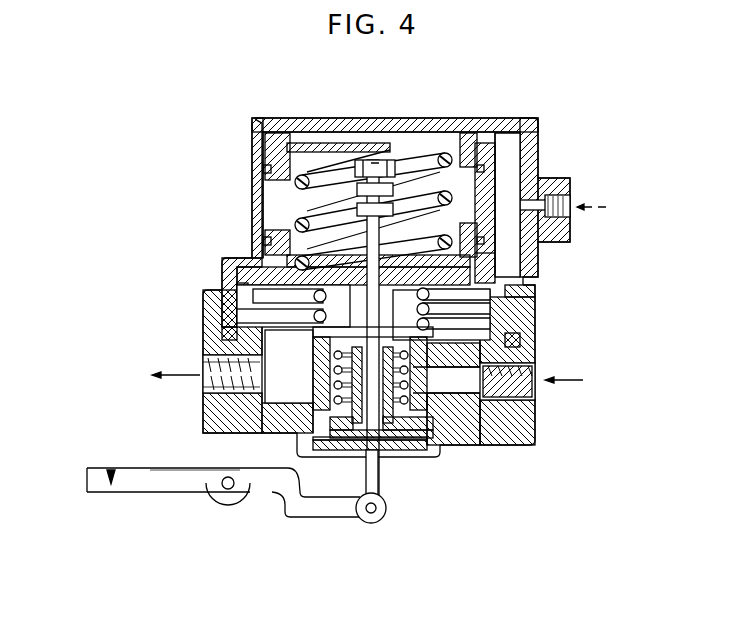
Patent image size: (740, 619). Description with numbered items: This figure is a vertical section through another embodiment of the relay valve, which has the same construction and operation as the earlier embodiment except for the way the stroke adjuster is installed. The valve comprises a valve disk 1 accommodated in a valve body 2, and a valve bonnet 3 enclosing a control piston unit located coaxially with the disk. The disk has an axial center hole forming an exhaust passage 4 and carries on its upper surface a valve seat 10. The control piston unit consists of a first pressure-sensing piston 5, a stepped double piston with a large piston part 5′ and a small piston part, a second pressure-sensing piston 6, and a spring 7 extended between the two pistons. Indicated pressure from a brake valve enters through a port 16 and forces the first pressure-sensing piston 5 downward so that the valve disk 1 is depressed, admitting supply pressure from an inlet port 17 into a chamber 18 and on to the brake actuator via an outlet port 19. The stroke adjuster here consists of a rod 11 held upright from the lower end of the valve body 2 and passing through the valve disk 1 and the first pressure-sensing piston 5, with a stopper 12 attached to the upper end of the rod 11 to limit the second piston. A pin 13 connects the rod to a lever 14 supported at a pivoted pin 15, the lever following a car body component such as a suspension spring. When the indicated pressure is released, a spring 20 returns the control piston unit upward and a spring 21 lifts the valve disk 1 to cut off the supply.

The valve disk 1 is at (400, 442).
The valve body 2 is at (520, 445).
The valve bonnet 3 is at (517, 123).
The exhaust passage 4 is at (386, 443).
The first pressure-sensing piston 5 is at (262, 250).
The large piston part 5′ is at (520, 277).
The second pressure-sensing piston 6 is at (350, 118).
The spring 7 is at (276, 173).
The valve seat 10 is at (523, 390).
The rod 11 is at (378, 477).
The stopper 12 is at (392, 160).
The pin 13 is at (367, 520).
The lever 14 is at (137, 492).
The pivoted pin 15 is at (226, 490).
The port 16 is at (568, 190).
The inlet port 17 is at (520, 400).
The chamber 18 is at (470, 302).
The outlet port 19 is at (203, 357).
The spring 20 is at (430, 327).
The spring 21 is at (312, 373).